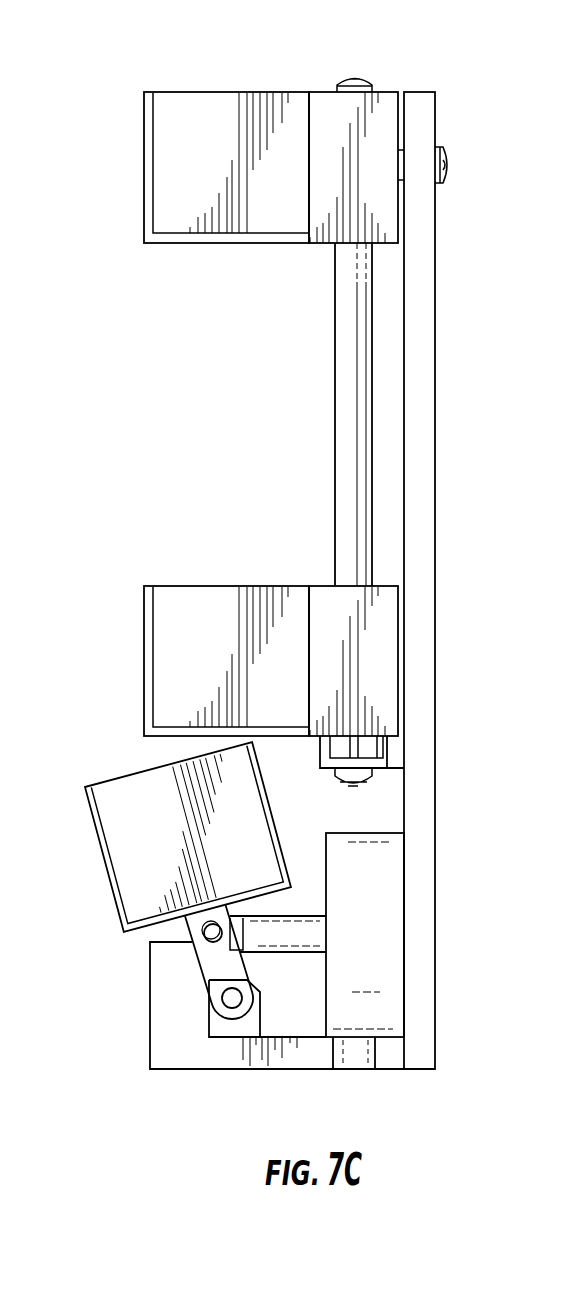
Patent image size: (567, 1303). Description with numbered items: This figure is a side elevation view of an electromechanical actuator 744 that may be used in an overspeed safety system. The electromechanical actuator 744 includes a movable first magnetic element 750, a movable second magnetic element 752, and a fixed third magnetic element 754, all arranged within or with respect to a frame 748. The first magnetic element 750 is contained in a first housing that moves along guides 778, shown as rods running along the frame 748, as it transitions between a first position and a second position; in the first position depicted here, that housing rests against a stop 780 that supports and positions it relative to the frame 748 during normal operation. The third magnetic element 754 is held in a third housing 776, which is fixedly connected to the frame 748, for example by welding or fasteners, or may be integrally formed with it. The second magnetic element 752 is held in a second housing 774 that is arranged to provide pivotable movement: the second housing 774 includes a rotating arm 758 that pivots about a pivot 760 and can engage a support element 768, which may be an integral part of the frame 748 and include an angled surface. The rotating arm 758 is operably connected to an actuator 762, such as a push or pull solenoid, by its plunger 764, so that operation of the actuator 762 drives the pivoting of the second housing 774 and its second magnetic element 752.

The electromechanical actuator 744 is at (78, 115).
The frame 748 is at (422, 402).
The movable first magnetic element 750 is at (217, 600).
The movable second magnetic element 752 is at (125, 797).
The fixed third magnetic element 754 is at (219, 112).
The rotating arm 758 is at (210, 963).
The pivot 760 is at (250, 1025).
The actuator 762 is at (390, 913).
The plunger 764 is at (285, 938).
The support element 768 is at (155, 1026).
The second housing 774 is at (92, 807).
The third housing 776 is at (384, 110).
The guides 778 is at (345, 392).
The stop 780 is at (388, 755).